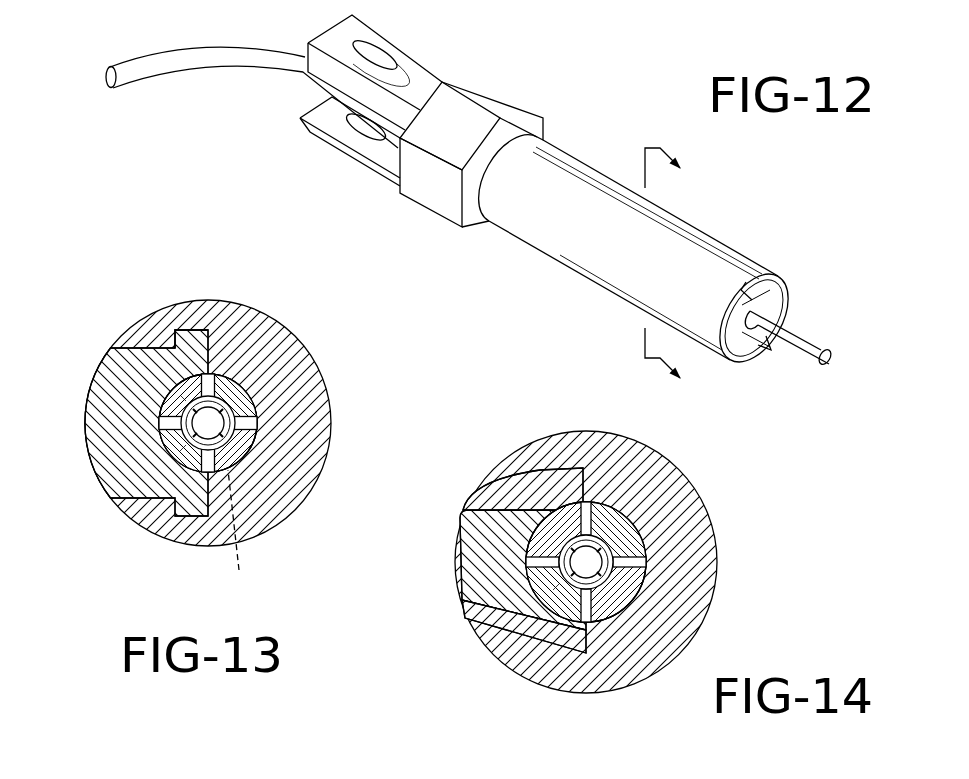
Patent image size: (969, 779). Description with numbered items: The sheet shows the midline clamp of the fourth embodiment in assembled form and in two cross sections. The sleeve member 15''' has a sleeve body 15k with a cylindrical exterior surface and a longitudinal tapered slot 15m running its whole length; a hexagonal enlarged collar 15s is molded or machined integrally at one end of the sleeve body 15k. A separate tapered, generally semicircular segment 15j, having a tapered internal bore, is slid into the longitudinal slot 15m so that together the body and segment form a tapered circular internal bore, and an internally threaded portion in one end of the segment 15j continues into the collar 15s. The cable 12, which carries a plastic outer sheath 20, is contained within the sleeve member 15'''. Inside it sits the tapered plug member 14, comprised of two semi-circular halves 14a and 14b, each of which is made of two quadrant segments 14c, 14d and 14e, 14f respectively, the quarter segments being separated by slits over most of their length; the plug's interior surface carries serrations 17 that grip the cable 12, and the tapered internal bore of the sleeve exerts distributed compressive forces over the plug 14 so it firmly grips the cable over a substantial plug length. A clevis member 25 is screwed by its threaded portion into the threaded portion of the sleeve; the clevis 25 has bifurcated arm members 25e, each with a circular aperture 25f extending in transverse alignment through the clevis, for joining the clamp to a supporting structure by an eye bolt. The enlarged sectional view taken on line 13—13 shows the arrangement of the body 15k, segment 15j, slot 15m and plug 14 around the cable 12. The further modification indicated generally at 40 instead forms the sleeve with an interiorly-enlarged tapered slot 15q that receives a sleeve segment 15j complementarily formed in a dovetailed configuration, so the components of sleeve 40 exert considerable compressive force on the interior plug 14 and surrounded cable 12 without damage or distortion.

In FIG. 12, the cable 12 is at (167, 62).
In FIG. 12, the clevis member 25 is at (450, 60).
In FIG. 12, the bifurcated arm members 25e is at (340, 33).
In FIG. 12, the circular aperture 25f is at (388, 52).
In FIG. 12, the hexagonal enlarged collar 15s is at (494, 96).
In FIG. 12, the sleeve member 15''' is at (676, 208).
In FIG. 12, the sleeve body 15k is at (556, 245).
In FIG. 13, the sleeve body 15k is at (330, 437).
In FIG. 14, the sleeve body 15k is at (714, 595).
In FIG. 12, the tapered generally semicircular segment 15j is at (779, 297).
In FIG. 13, the tapered generally semicircular segment 15j is at (83, 441).
In FIG. 14, the tapered generally semicircular segment 15j is at (460, 572).
In FIG. 12, the section line 13 is at (678, 272).
In FIG. 13, the longitudinal tapered slot 15m is at (200, 327).
In FIG. 13, the tapered plug member 14 is at (259, 460).
In FIG. 13, the semi-circular half 14a is at (257, 395).
In FIG. 14, the semi-circular half 14a is at (645, 520).
In FIG. 13, the semi-circular half 14b is at (172, 390).
In FIG. 14, the quadrant segment 14c is at (645, 542).
In FIG. 13, the quadrant segment 14d is at (251, 452).
In FIG. 14, the quadrant segment 14d is at (630, 598).
In FIG. 13, the quadrant segment 14e is at (170, 403).
In FIG. 14, the quadrant segment 14e is at (548, 530).
In FIG. 13, the quadrant segment 14f is at (170, 447).
In FIG. 14, the quadrant segment 14f is at (545, 602).
In FIG. 13, the plastic outer sheath 20 is at (232, 375).
In FIG. 13, the serrations 17 is at (241, 532).
In FIG. 14, the interiorly-enlarged tapered slot 15q is at (539, 500).
In FIG. 14, the sleeve 40 is at (694, 464).